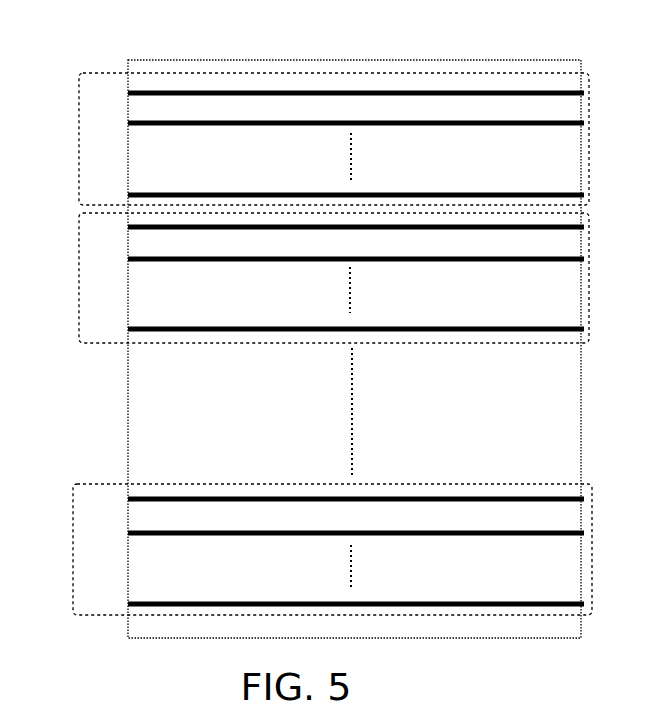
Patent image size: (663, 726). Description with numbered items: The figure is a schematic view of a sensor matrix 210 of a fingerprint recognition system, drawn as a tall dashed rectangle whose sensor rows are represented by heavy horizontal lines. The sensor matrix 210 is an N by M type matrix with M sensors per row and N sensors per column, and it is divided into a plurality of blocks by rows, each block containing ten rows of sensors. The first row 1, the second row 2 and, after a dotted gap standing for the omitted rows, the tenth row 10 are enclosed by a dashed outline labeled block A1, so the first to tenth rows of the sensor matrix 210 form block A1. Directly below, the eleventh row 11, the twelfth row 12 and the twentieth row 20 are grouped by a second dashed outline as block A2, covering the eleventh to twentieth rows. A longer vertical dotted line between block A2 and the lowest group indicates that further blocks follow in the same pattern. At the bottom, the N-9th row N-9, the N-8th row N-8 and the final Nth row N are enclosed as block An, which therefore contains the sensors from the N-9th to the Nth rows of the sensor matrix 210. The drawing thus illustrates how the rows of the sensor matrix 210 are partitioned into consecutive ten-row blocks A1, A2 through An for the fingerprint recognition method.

The sensor matrix 210 is at (387, 21).
The block A1 is at (308, 139).
The block A2 is at (308, 278).
The block An is at (307, 549).
The first row of sensors 1 is at (348, 93).
The second row of sensors 2 is at (348, 123).
The tenth row of sensors 10 is at (341, 194).
The eleventh row of sensors 11 is at (341, 226).
The twelfth row of sensors 12 is at (341, 259).
The twentieth row of sensors 20 is at (341, 328).
The N-9th row of sensors N-9 is at (335, 498).
The N-8th row of sensors N-8 is at (335, 532).
The Nth row of sensors N is at (346, 603).